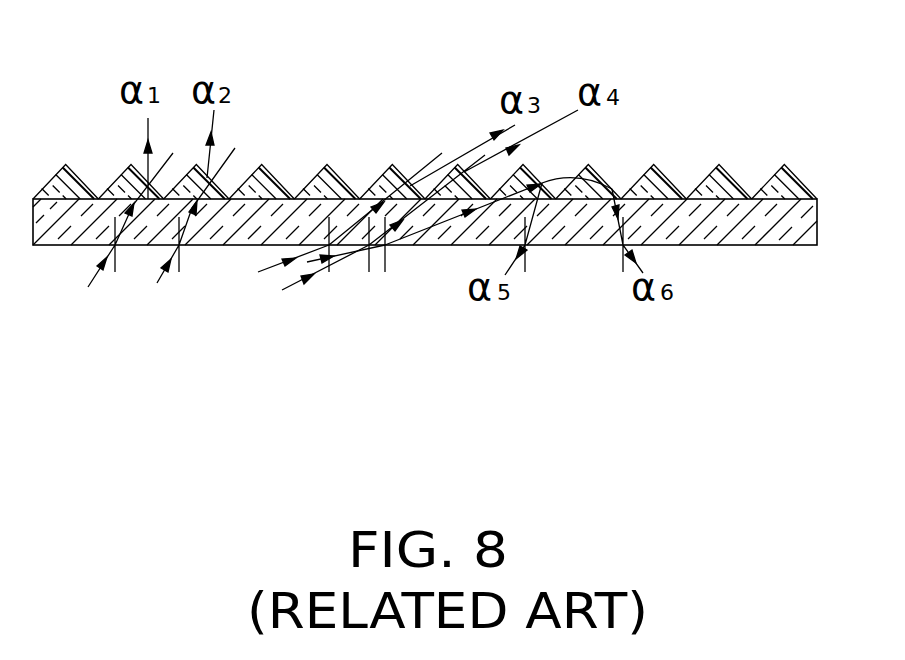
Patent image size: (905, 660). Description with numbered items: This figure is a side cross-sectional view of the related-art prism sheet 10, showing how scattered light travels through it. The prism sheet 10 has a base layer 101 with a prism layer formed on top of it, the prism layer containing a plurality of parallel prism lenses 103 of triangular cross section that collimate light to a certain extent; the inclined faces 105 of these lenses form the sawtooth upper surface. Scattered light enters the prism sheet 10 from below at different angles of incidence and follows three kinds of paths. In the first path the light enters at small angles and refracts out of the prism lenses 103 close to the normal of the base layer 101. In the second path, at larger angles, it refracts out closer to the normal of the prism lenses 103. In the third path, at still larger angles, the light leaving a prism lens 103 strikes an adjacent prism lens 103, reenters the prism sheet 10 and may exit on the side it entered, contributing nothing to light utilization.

The prism sheet 10 is at (368, 94).
The base layer 101 is at (756, 225).
The prism lenses 103 is at (783, 183).
The inclined prism surface 105 is at (731, 175).